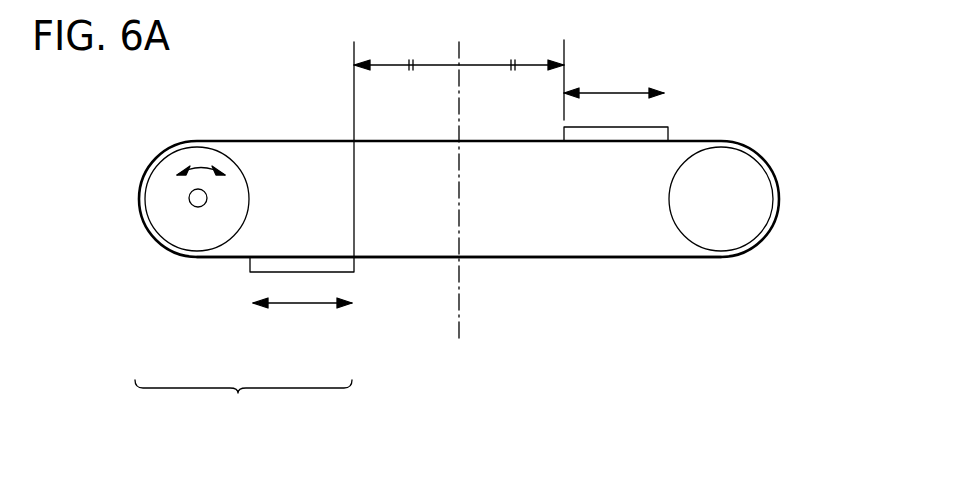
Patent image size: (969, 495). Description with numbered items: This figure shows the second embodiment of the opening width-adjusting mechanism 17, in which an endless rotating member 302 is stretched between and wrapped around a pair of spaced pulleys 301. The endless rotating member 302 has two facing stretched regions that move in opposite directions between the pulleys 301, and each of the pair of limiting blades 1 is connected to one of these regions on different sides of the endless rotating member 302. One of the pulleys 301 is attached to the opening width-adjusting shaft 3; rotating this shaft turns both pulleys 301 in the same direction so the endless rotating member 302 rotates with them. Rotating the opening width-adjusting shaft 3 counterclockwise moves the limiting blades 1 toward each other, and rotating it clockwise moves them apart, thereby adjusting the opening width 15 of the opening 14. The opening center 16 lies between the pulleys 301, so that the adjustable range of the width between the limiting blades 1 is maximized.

The limiting blade 1 is at (345, 273).
The opening width-adjusting shaft 3 is at (198, 198).
The opening 14 is at (536, 110).
The opening width 15 is at (459, 54).
The opening center 16 is at (459, 312).
The opening width-adjusting mechanism 17 is at (243, 402).
The pulley 301 is at (167, 230).
The endless rotating member 302 is at (232, 258).